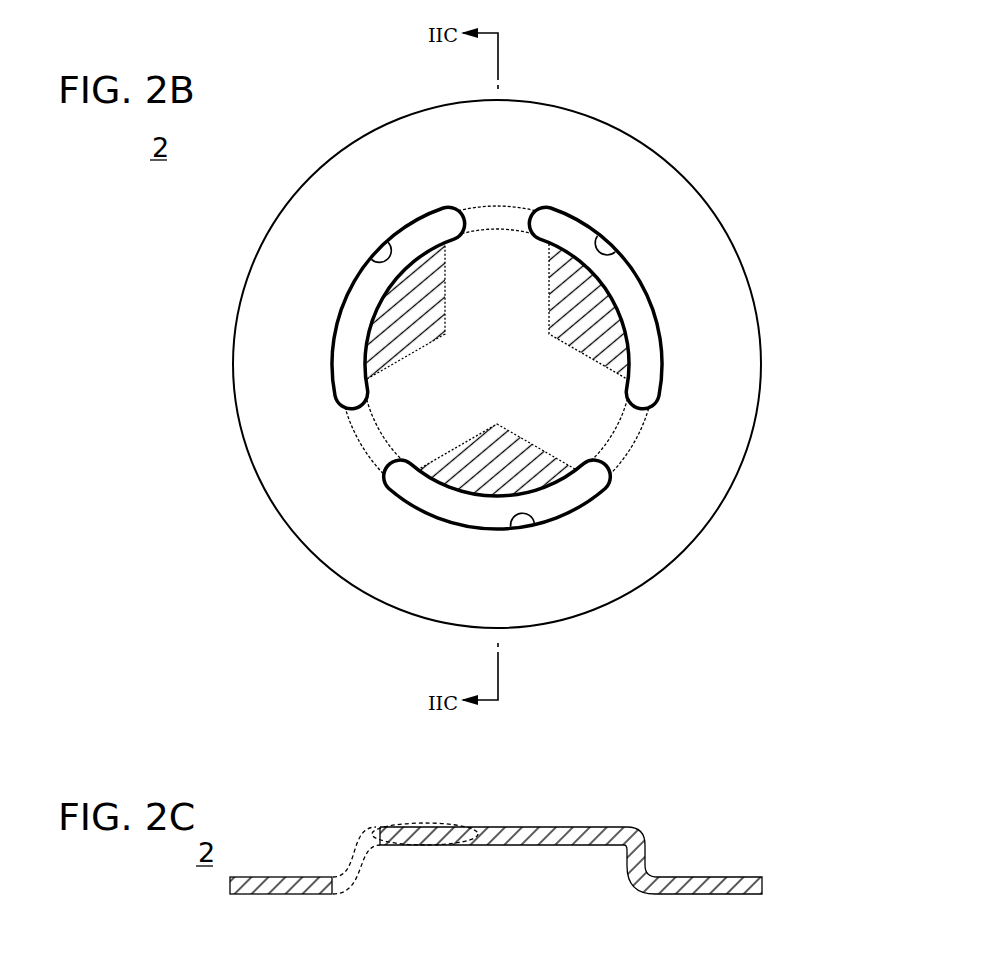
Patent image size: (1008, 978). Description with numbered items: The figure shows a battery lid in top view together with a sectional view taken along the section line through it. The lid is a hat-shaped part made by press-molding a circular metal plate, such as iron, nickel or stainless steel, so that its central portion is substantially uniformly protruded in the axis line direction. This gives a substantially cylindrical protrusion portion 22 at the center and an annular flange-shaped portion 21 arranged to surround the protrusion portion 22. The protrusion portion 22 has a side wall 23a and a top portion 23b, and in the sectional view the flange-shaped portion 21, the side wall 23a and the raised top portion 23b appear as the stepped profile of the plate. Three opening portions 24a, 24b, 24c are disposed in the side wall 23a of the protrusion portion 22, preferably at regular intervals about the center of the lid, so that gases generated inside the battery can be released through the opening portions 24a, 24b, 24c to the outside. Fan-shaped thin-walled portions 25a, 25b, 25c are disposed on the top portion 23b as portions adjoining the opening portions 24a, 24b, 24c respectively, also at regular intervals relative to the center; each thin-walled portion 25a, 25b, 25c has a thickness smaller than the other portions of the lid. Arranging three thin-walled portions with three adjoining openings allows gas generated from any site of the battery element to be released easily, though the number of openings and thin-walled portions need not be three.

In FIG. 2B, the annular flange-shaped portion 21 is at (733, 355).
In FIG. 2C, the annular flange-shaped portion 21 is at (738, 875).
In FIG. 2C, the protrusion portion 22 is at (640, 821).
In FIG. 2B, the side wall 23a is at (608, 458).
In FIG. 2C, the side wall 23a is at (643, 856).
In FIG. 2B, the top portion 23b is at (610, 410).
In FIG. 2C, the top portion 23b is at (570, 827).
In FIG. 2B, the opening portion 24a is at (508, 518).
In FIG. 2C, the opening portion 24a is at (342, 872).
In FIG. 2B, the opening portion 24b is at (603, 237).
In FIG. 2B, the opening portion 24c is at (390, 240).
In FIG. 2B, the thin-walled portion 25a is at (550, 478).
In FIG. 2C, the thin-walled portion 25a is at (435, 818).
In FIG. 2B, the thin-walled portion 25b is at (592, 300).
In FIG. 2B, the thin-walled portion 25c is at (393, 302).